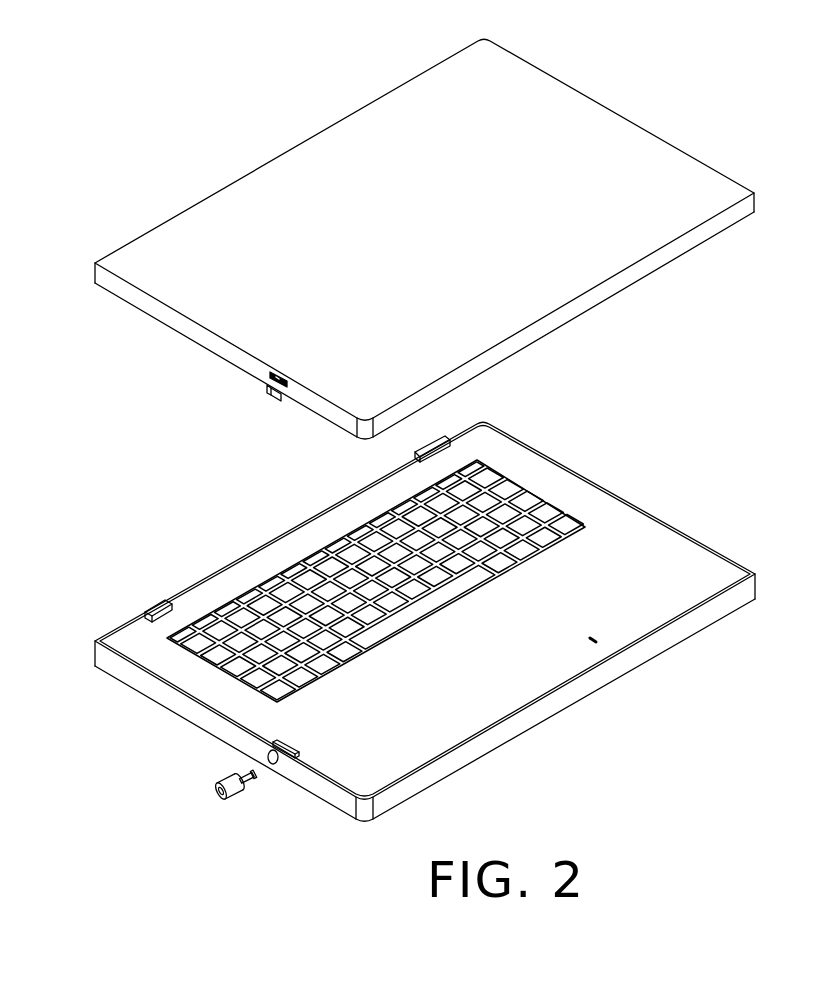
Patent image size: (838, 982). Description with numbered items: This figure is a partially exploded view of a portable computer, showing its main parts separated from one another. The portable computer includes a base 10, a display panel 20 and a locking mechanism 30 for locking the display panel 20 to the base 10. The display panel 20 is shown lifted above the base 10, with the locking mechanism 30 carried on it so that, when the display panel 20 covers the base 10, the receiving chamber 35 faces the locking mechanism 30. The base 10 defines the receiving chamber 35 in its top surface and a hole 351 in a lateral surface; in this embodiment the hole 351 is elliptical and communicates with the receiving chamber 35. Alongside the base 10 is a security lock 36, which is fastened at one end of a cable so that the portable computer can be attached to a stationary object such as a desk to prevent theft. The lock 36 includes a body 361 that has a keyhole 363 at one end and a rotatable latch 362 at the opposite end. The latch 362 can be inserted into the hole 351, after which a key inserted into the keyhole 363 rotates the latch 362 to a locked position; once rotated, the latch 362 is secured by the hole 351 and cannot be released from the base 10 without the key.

The base 10 is at (623, 627).
The display panel 20 is at (673, 190).
The locking mechanism 30 is at (268, 397).
The receiving chamber 35 is at (293, 756).
The hole 351 is at (273, 764).
The security lock 36 is at (176, 786).
The body 361 is at (228, 800).
The latch 362 is at (243, 774).
The keyhole 363 is at (212, 791).